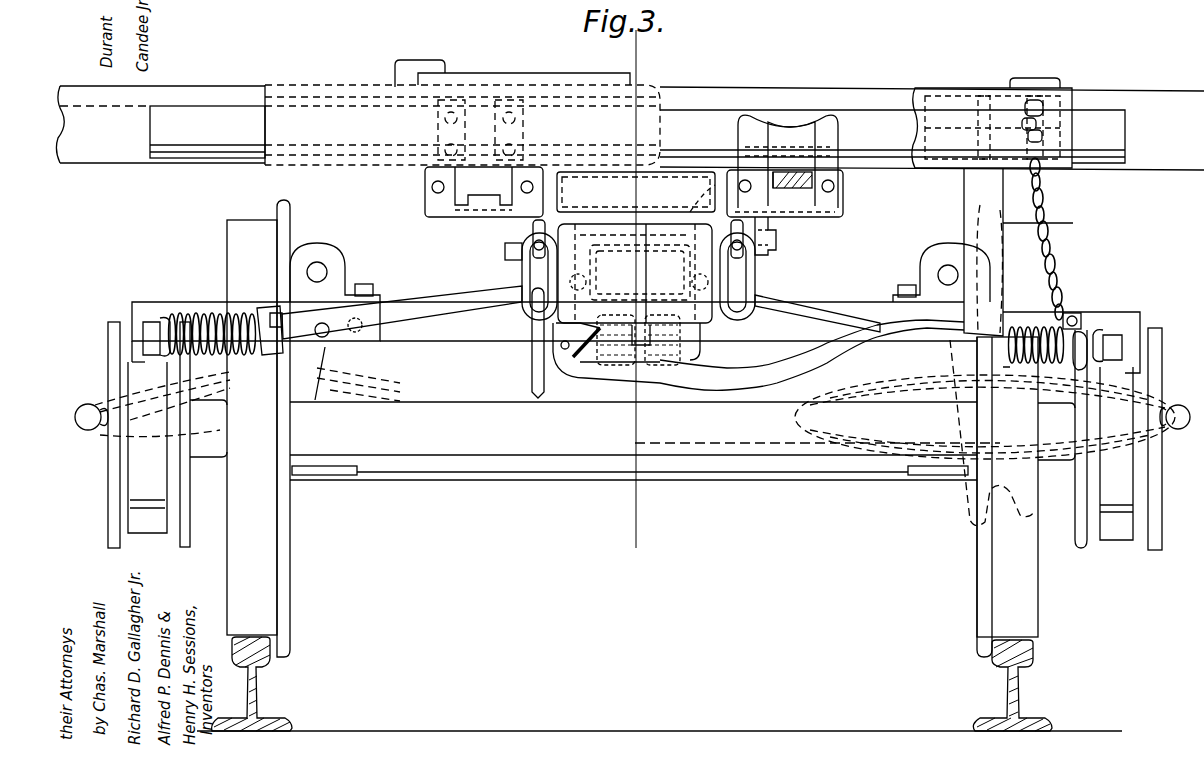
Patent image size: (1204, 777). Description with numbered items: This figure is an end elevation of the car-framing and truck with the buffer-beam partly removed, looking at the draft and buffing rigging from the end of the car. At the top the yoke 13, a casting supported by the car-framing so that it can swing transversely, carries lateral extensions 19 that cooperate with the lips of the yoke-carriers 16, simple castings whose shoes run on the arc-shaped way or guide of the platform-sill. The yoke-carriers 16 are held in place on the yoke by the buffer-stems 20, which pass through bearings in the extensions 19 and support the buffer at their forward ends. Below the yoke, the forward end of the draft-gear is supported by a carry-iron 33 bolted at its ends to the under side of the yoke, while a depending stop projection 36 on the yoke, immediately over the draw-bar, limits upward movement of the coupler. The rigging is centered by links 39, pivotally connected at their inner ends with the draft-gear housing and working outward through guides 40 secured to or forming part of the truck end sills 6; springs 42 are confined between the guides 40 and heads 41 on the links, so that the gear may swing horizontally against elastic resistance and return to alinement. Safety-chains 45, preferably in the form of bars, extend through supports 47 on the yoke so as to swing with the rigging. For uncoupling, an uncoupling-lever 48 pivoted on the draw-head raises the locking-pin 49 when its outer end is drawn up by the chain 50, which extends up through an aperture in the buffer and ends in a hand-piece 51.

The truck end sill 6 is at (636, 391).
The yoke 13 is at (636, 192).
The yoke-carrier 16 is at (630, 134).
The lateral extension 19 is at (425, 183).
The buffer-stem 20 is at (797, 190).
The carry-iron 33 is at (636, 345).
The depending stop projection 36 is at (588, 213).
The link 39 is at (470, 292).
The guide 40 is at (268, 310).
The head 41 is at (160, 322).
The spring 42 is at (203, 315).
The safety-chain 45 is at (524, 305).
The support 47 is at (768, 238).
The uncoupling-lever 48 is at (774, 355).
The locking-pin 49 is at (652, 332).
The chain 50 is at (1050, 240).
The hand-piece 51 is at (992, 115).